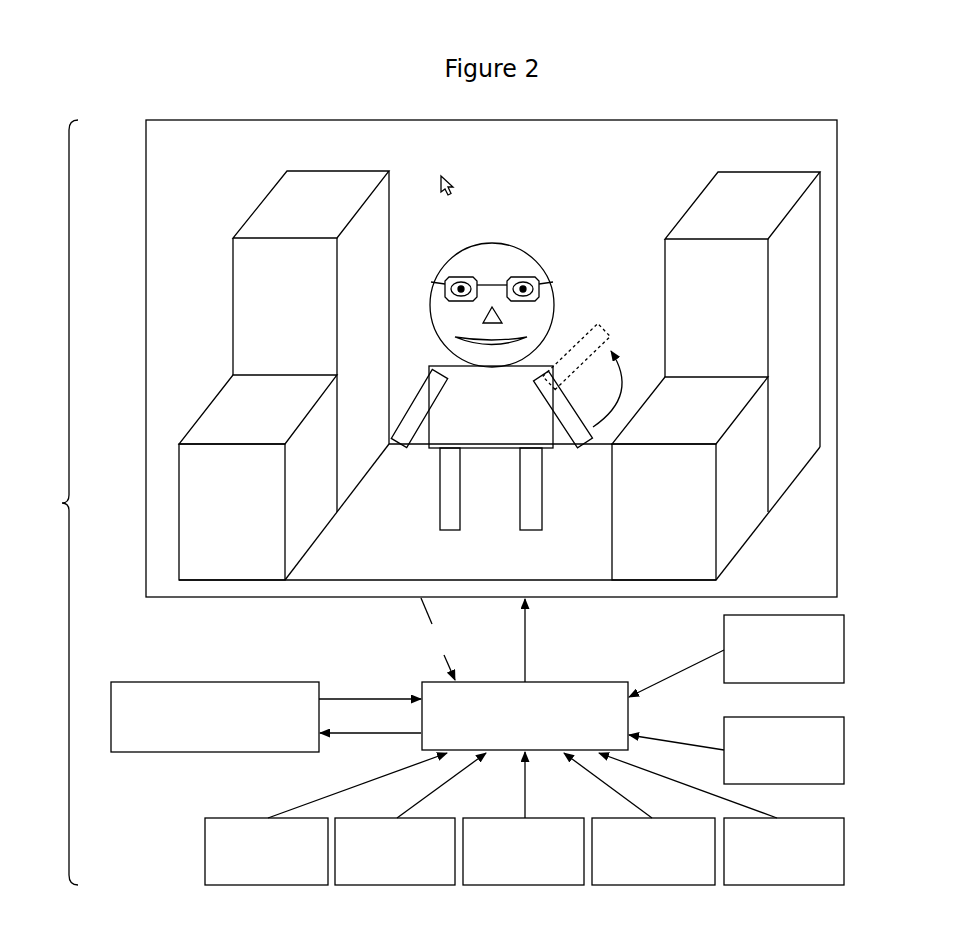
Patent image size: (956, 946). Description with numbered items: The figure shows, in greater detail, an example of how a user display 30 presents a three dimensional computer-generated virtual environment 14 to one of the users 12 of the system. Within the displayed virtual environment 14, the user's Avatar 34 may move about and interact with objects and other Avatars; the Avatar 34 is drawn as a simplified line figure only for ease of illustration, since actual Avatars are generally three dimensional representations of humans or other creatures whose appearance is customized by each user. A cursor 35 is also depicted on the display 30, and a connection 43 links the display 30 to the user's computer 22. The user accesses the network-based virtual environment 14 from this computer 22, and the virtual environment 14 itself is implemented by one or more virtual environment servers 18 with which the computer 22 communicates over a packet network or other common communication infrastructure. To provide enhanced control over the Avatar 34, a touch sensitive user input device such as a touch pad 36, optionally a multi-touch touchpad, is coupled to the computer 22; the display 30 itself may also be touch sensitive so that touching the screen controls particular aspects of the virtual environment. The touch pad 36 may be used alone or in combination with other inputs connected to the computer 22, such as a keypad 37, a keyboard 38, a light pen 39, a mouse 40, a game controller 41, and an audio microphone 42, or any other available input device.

The users 12 is at (35, 511).
The network-based virtual environment 14 is at (225, 155).
The virtual environment server 18 is at (266, 717).
The computer 22 is at (517, 733).
The user display 30 is at (777, 119).
The Avatar 34 is at (531, 249).
The cursor 35 is at (450, 176).
The touch pad 36 is at (816, 166).
The keypad 37 is at (387, 869).
The keyboard 38 is at (516, 869).
The light pen 39 is at (646, 869).
The mouse 40 is at (776, 869).
The game controller 41 is at (736, 750).
The audio microphone 42 is at (801, 666).
The connection between display and user computer 43 is at (473, 640).